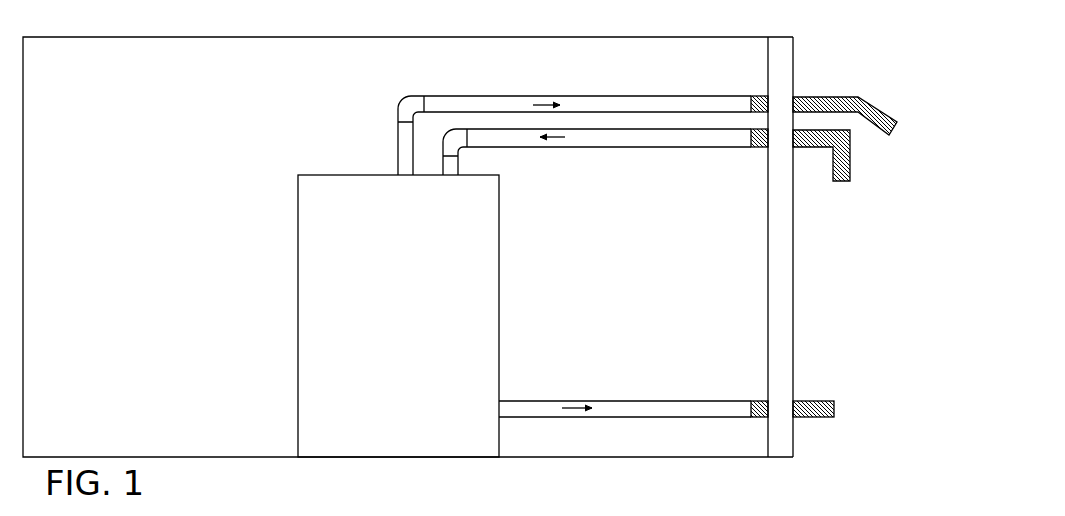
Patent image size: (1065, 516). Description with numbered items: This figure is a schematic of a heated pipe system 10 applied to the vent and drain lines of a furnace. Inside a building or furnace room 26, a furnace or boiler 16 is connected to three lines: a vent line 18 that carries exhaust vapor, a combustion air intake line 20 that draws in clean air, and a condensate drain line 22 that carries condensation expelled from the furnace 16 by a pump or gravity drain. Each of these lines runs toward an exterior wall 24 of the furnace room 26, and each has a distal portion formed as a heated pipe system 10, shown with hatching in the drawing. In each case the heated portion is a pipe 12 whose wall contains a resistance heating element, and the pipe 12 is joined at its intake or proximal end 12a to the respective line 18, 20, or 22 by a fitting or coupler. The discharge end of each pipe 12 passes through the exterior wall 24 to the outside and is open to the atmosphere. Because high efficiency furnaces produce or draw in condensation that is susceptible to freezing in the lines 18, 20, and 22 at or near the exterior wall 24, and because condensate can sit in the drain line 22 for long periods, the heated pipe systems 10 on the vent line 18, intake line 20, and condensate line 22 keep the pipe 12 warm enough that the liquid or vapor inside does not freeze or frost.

The heated pipe system 10 is at (847, 82).
The pipe 12 is at (816, 97).
The proximal end of the pipe 12a is at (750, 93).
The furnace 16 is at (413, 390).
The vent line 18 is at (610, 104).
The combustion air intake line 20 is at (586, 132).
The condensate drain line 22 is at (647, 400).
The exterior wall 24 is at (778, 265).
The furnace room 26 is at (67, 75).